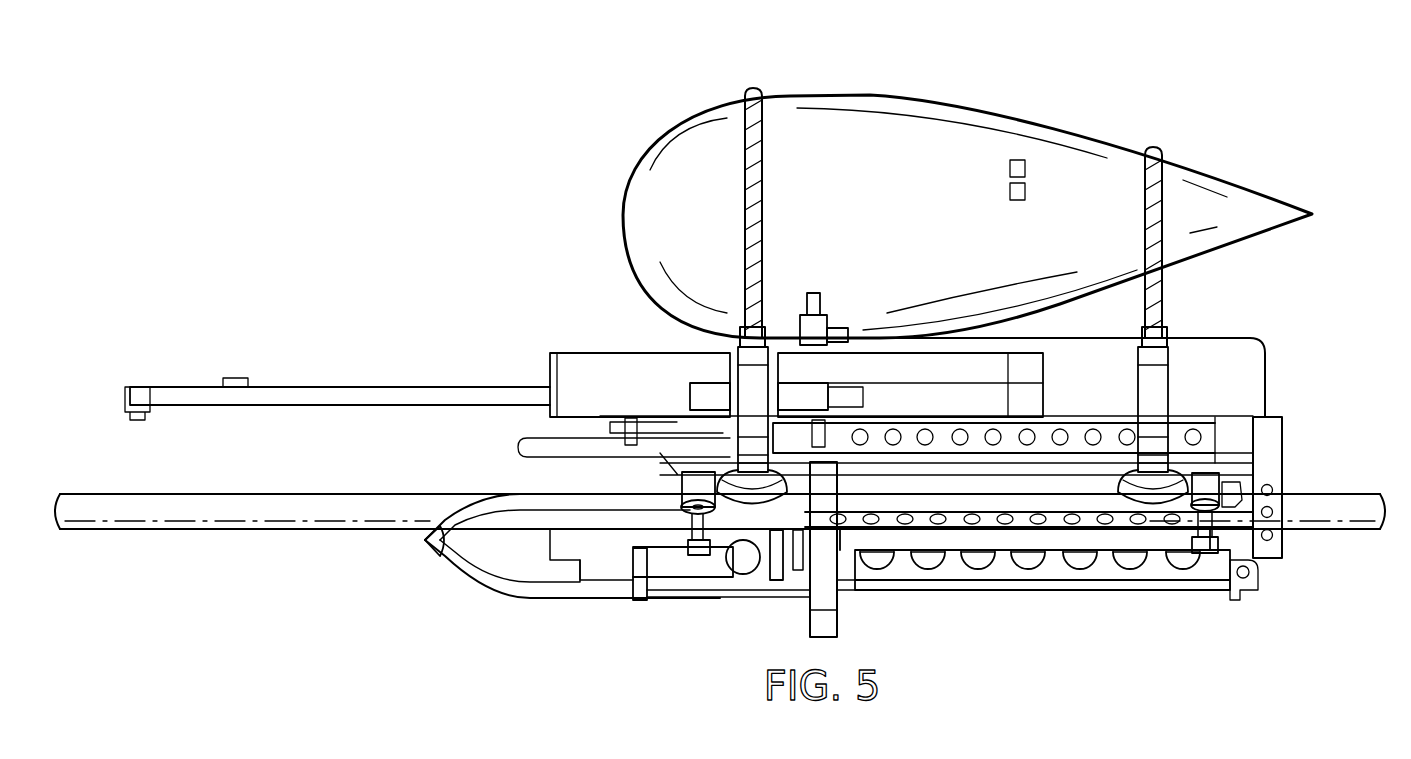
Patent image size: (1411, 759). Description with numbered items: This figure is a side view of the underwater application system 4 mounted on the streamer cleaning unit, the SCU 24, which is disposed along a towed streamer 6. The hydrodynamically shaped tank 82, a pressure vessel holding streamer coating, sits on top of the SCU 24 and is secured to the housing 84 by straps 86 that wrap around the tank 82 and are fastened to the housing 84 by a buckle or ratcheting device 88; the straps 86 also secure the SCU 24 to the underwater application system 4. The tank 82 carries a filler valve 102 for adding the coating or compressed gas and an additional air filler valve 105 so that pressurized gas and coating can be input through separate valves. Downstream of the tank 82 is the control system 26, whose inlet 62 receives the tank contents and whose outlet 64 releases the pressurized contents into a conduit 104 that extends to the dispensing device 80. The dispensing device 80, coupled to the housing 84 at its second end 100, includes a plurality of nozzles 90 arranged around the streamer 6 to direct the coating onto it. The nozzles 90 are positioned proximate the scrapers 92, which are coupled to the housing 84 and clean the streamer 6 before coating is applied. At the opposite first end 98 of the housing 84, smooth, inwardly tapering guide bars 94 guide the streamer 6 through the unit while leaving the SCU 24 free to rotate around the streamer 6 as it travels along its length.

The underwater application system 4 is at (680, 85).
The streamer 6 is at (195, 530).
The SCU 24 is at (1037, 608).
The control system 26 is at (795, 328).
The inlet 62 is at (813, 292).
The outlet 64 is at (840, 327).
The dispensing device 80 is at (1283, 442).
The tank 82 is at (905, 95).
The housing 84 is at (580, 352).
The straps 86 is at (745, 208).
The buckle or ratcheting device 88 is at (745, 330).
The nozzles 90 is at (1273, 512).
The scrapers 92 is at (905, 524).
The guide bars 94 is at (512, 495).
The first end 98 is at (445, 605).
The second end 100 is at (1250, 672).
The filler valve 102 is at (1008, 165).
The conduit 104 is at (1270, 385).
The air filler valve 105 is at (1027, 192).